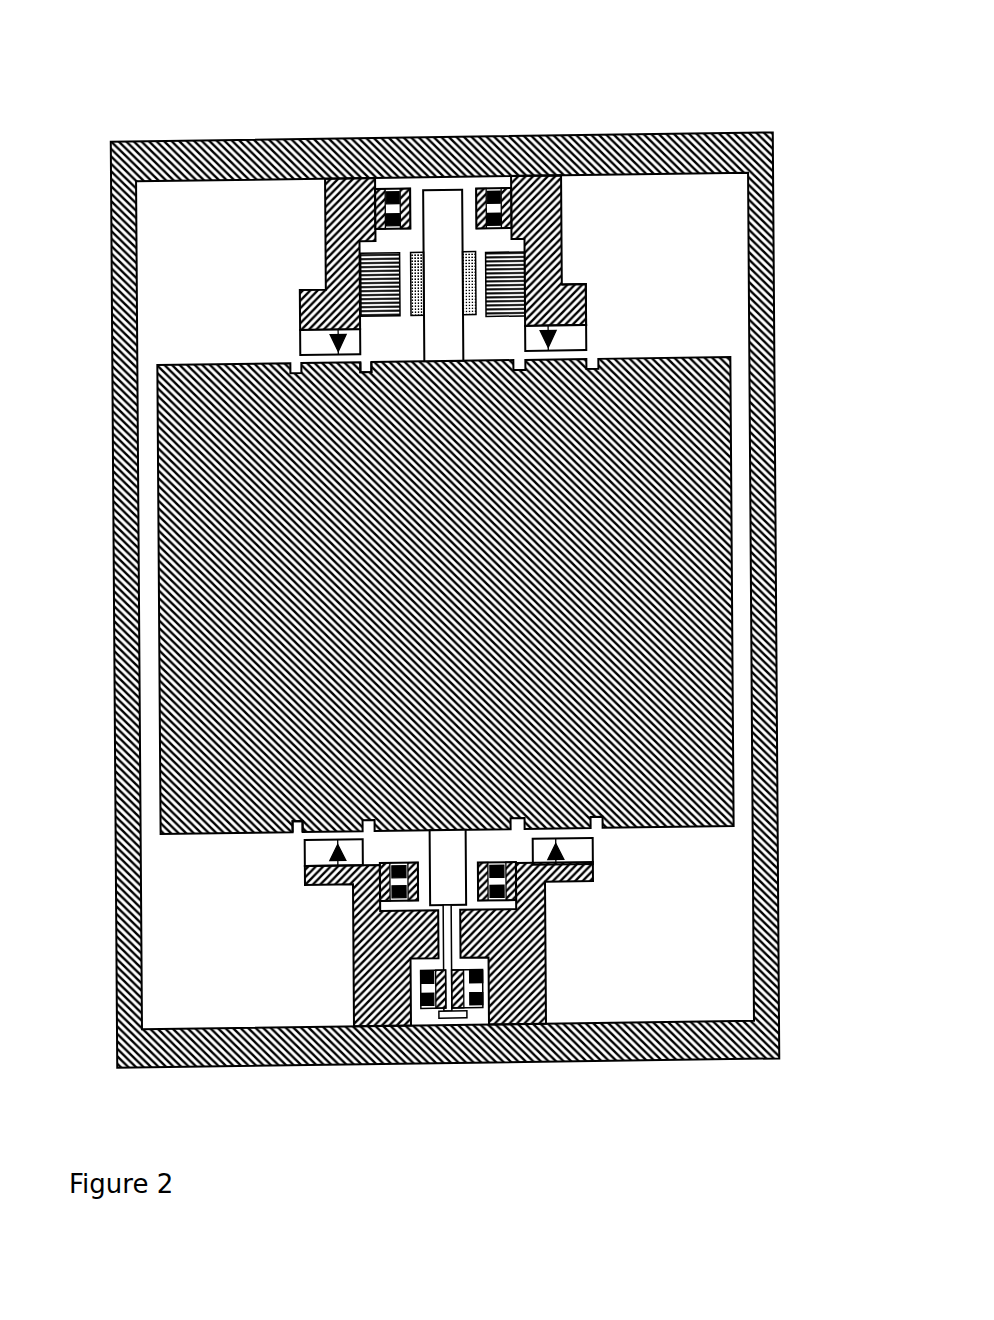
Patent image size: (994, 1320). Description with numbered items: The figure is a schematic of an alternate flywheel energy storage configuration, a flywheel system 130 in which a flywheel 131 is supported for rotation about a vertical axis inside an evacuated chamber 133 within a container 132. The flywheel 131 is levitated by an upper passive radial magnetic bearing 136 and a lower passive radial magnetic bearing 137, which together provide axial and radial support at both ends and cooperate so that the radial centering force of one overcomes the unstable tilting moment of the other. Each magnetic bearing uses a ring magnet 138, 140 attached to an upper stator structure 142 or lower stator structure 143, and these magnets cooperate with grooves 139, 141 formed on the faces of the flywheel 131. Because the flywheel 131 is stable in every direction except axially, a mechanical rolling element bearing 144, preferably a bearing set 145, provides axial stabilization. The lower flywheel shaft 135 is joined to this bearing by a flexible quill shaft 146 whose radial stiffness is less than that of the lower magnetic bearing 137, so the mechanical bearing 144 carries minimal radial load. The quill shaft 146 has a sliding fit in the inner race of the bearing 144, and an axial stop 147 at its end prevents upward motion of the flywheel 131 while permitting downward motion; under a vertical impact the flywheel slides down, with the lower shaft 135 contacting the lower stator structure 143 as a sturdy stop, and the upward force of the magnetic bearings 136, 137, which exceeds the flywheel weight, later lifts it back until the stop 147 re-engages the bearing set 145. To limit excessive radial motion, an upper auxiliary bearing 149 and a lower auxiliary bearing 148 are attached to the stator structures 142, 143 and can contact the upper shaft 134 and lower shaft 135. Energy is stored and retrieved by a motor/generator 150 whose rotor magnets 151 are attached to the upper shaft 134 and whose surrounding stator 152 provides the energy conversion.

The flywheel system 130 is at (147, 61).
The flywheel 131 is at (726, 614).
The container 132 is at (769, 710).
The evacuated chamber 133 is at (730, 927).
The upper shaft 134 is at (436, 181).
The lower flywheel shaft 135 is at (461, 826).
The upper passive radial magnetic bearing 136 is at (600, 341).
The lower passive radial magnetic bearing 137 is at (600, 838).
The ring magnet 138 is at (294, 331).
The groove 139 is at (354, 360).
The ring magnet 140 is at (295, 843).
The groove 141 is at (292, 806).
The upper stator structure 142 is at (556, 196).
The lower stator structure 143 is at (535, 985).
The mechanical rolling element bearing 144 is at (415, 1004).
The bearing set 145 is at (472, 999).
The flexible quill shaft 146 is at (441, 931).
The axial stop 147 is at (441, 1010).
The lower auxiliary bearing 148 is at (403, 851).
The upper auxiliary bearing 149 is at (480, 184).
The motor/generator 150 is at (399, 326).
The rotor magnets 151 is at (462, 300).
The stator 152 is at (522, 313).